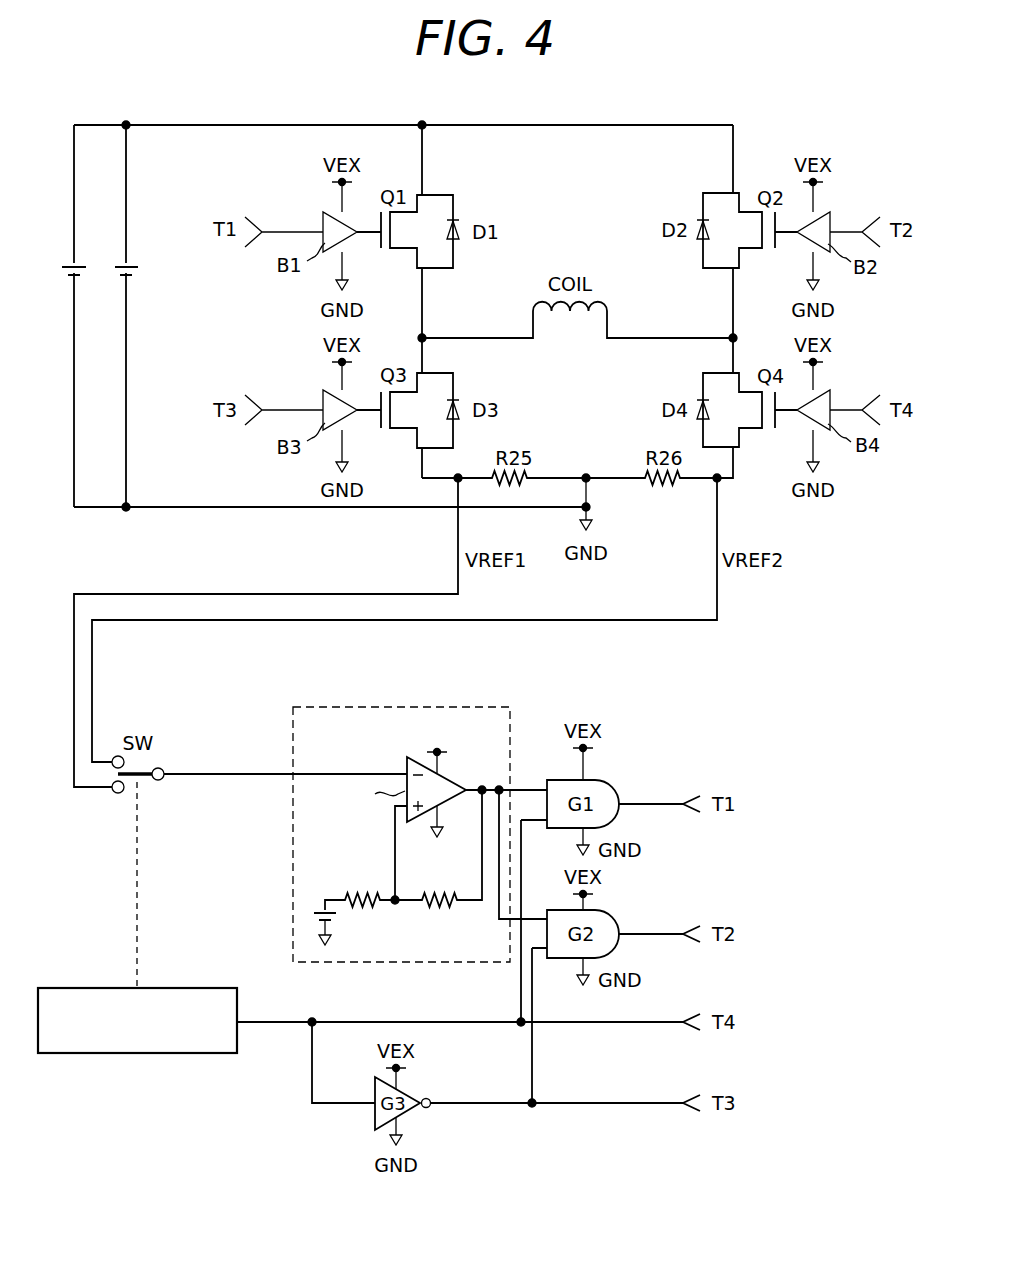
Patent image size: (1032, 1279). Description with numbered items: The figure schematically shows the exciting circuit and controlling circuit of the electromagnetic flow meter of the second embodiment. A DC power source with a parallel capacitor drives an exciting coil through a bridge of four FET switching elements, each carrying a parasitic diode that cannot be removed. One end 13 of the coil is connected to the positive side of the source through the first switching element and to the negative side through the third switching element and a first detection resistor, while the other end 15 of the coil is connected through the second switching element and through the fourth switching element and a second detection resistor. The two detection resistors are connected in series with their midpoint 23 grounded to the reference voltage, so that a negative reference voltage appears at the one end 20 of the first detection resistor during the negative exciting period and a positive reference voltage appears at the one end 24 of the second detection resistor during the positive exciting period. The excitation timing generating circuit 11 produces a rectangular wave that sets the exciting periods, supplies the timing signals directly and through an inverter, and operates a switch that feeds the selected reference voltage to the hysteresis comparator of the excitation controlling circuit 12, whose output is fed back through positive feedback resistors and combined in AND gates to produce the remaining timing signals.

The excitation timing generating circuit 11 is at (100, 1053).
The excitation controlling circuit 12 is at (470, 707).
The one end of the exciting coil 13 is at (423, 336).
The other end of the exciting coil 15 is at (734, 336).
The one end of the first detection resistor 20 is at (459, 476).
The ground node 23 is at (587, 476).
The one end of the second detection resistor 24 is at (719, 480).